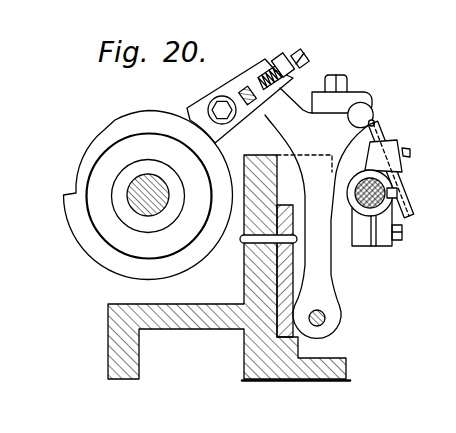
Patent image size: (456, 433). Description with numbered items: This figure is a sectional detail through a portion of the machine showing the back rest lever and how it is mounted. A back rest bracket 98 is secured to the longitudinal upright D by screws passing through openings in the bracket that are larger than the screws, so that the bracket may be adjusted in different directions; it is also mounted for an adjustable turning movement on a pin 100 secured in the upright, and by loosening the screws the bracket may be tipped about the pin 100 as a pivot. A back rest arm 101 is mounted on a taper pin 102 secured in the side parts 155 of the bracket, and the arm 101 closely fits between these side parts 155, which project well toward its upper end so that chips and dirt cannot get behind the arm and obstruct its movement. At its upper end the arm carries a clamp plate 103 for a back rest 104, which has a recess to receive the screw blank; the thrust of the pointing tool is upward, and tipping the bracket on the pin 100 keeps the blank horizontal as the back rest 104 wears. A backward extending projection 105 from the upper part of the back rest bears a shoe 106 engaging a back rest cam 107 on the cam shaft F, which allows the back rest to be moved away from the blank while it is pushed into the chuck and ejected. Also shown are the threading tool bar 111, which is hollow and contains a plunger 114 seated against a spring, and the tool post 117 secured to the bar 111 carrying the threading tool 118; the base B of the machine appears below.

The back rest bracket 98 is at (296, 339).
The pin 100 is at (290, 241).
The back rest arm 101 is at (330, 293).
The taper pin 102 is at (323, 322).
The clamp plate 103 is at (368, 100).
The back rest 104 is at (376, 112).
The backward extending projection 105 is at (266, 62).
The shoe 106 is at (204, 102).
The back rest cam 107 is at (88, 167).
The threading tool bar 111 is at (392, 197).
The plunger 114 is at (392, 186).
The tool post 117 is at (393, 246).
The threading tool 118 is at (385, 133).
The side parts 155 is at (290, 162).
The element B is at (336, 384).
The longitudinal upright D is at (250, 283).
The cam shaft F is at (138, 207).